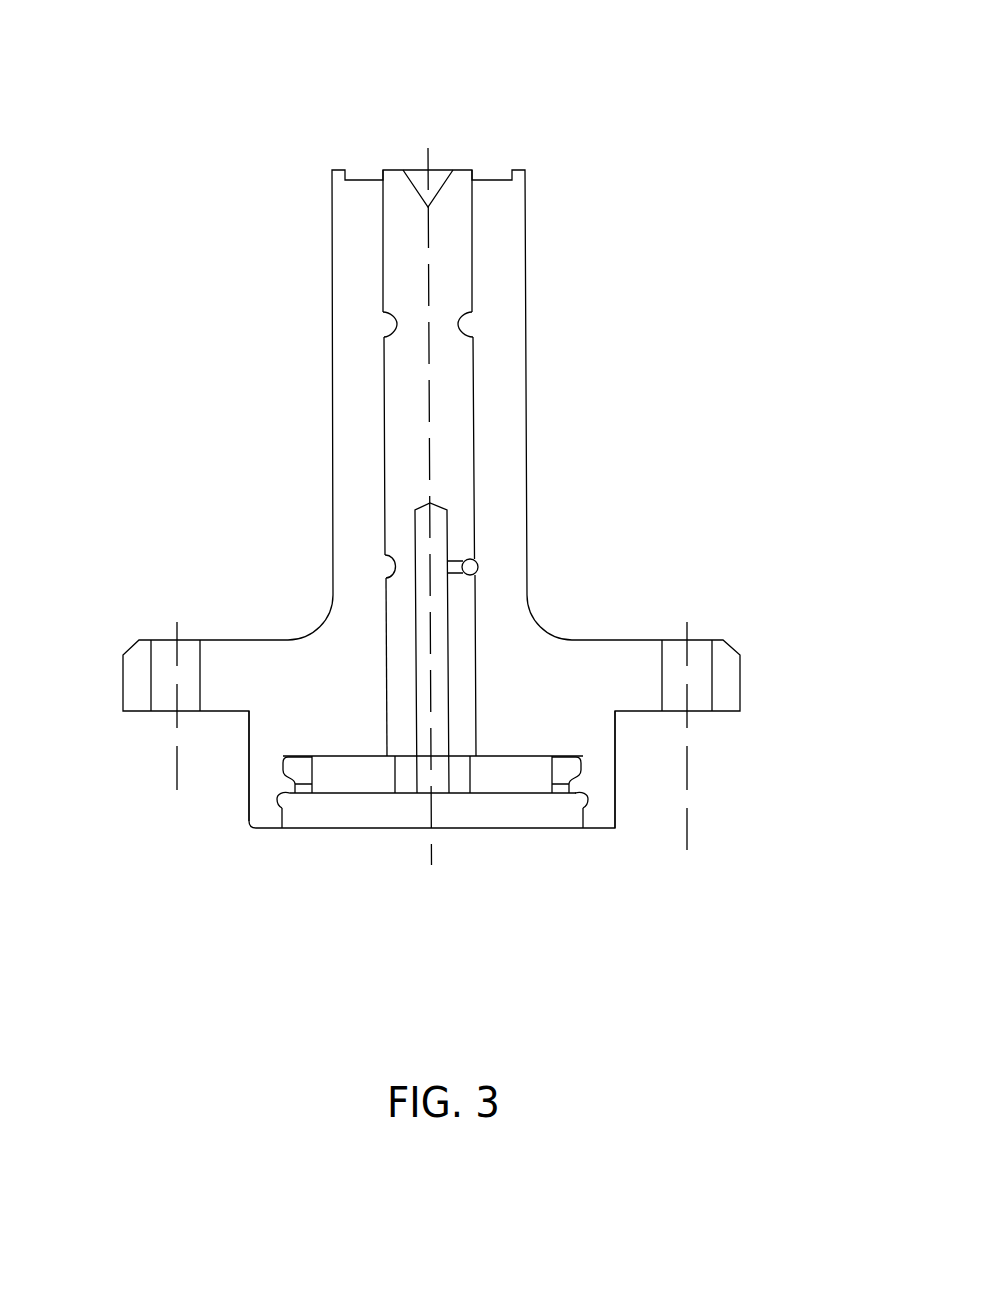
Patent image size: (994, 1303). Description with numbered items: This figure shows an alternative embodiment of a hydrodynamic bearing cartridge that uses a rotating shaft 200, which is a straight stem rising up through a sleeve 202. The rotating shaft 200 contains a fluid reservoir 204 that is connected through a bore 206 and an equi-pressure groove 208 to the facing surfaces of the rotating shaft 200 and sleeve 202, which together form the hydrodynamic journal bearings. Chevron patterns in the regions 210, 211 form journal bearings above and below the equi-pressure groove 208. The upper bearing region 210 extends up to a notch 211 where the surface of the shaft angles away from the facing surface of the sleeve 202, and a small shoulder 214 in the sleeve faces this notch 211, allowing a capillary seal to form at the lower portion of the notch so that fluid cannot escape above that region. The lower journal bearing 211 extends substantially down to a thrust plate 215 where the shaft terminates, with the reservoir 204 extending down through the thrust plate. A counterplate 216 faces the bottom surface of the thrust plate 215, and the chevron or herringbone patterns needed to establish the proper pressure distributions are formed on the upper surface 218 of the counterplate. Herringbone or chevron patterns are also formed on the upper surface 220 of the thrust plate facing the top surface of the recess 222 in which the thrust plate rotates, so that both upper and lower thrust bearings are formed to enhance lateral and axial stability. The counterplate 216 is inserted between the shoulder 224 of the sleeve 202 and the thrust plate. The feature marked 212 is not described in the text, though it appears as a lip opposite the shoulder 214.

The rotating shaft 200 is at (450, 490).
The sleeve 202 is at (517, 324).
The fluid reservoir 204 is at (442, 523).
The bore 206 is at (457, 558).
The equi-pressure groove 208 is at (473, 568).
The upper journal bearing region 210 is at (385, 450).
The notch 211 is at (385, 603).
The retaining lip 212 is at (386, 333).
The shoulder 214 is at (470, 327).
The thrust plate 215 is at (538, 768).
The counterplate 216 is at (527, 818).
The upper surface of counterplate 218 is at (350, 795).
The upper surface of thrust plate 220 is at (290, 802).
The recess 222 is at (298, 768).
The shoulder of sleeve 224 is at (606, 815).